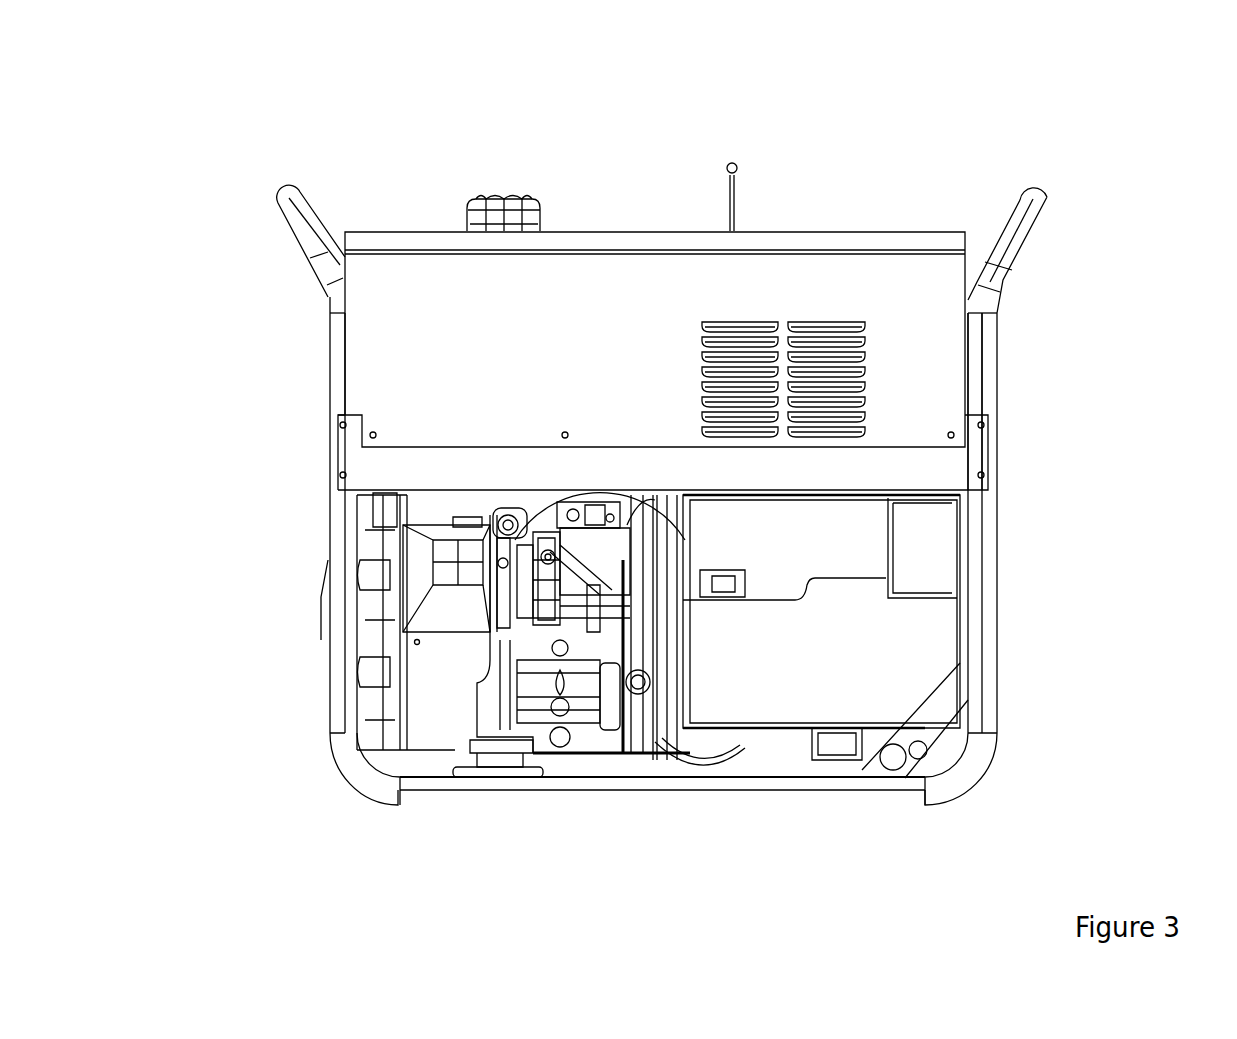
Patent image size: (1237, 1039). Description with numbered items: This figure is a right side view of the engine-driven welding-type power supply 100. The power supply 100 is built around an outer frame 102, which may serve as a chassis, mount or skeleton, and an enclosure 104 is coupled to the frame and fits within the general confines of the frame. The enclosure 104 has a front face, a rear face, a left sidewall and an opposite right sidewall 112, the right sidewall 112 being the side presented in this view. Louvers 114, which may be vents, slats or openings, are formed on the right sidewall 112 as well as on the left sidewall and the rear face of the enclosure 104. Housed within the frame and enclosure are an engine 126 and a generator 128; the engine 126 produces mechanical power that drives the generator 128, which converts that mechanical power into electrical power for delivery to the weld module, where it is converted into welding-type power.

The engine-driven welding-type power supply 100 is at (1110, 41).
The outer frame 102 is at (293, 197).
The enclosure 104 is at (633, 245).
The right sidewall 112 is at (948, 388).
The louvers 114 is at (797, 303).
The engine 126 is at (388, 610).
The generator 128 is at (930, 617).